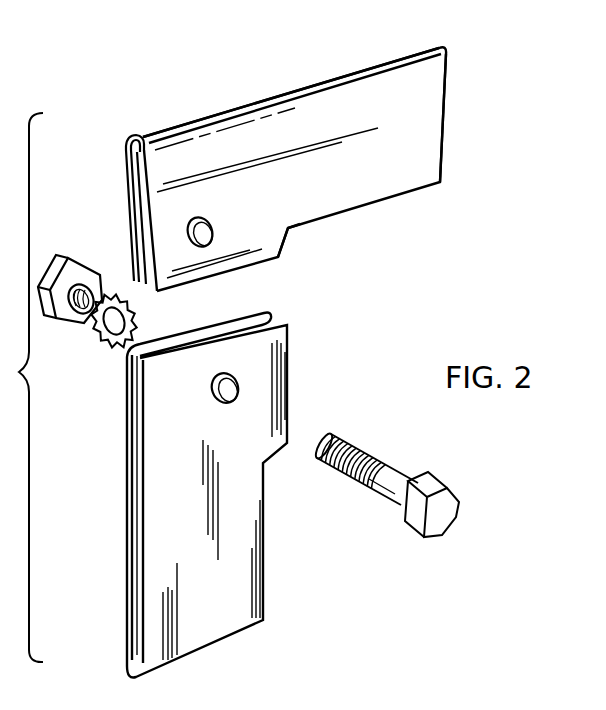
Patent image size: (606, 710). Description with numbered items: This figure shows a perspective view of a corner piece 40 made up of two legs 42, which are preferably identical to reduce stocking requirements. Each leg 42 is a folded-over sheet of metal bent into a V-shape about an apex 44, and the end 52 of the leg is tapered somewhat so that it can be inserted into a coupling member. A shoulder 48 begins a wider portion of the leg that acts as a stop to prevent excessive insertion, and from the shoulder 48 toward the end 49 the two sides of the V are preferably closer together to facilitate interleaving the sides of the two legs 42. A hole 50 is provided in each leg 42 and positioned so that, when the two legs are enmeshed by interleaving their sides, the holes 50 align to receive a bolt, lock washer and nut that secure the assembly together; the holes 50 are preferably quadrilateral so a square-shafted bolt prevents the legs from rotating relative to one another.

The corner piece 40 is at (186, 88).
The leg 42 is at (302, 88).
The apex 44 is at (362, 71).
The shoulder 48 is at (290, 234).
The end 49 is at (123, 181).
The hole 50 is at (212, 232).
The end 52 is at (453, 90).